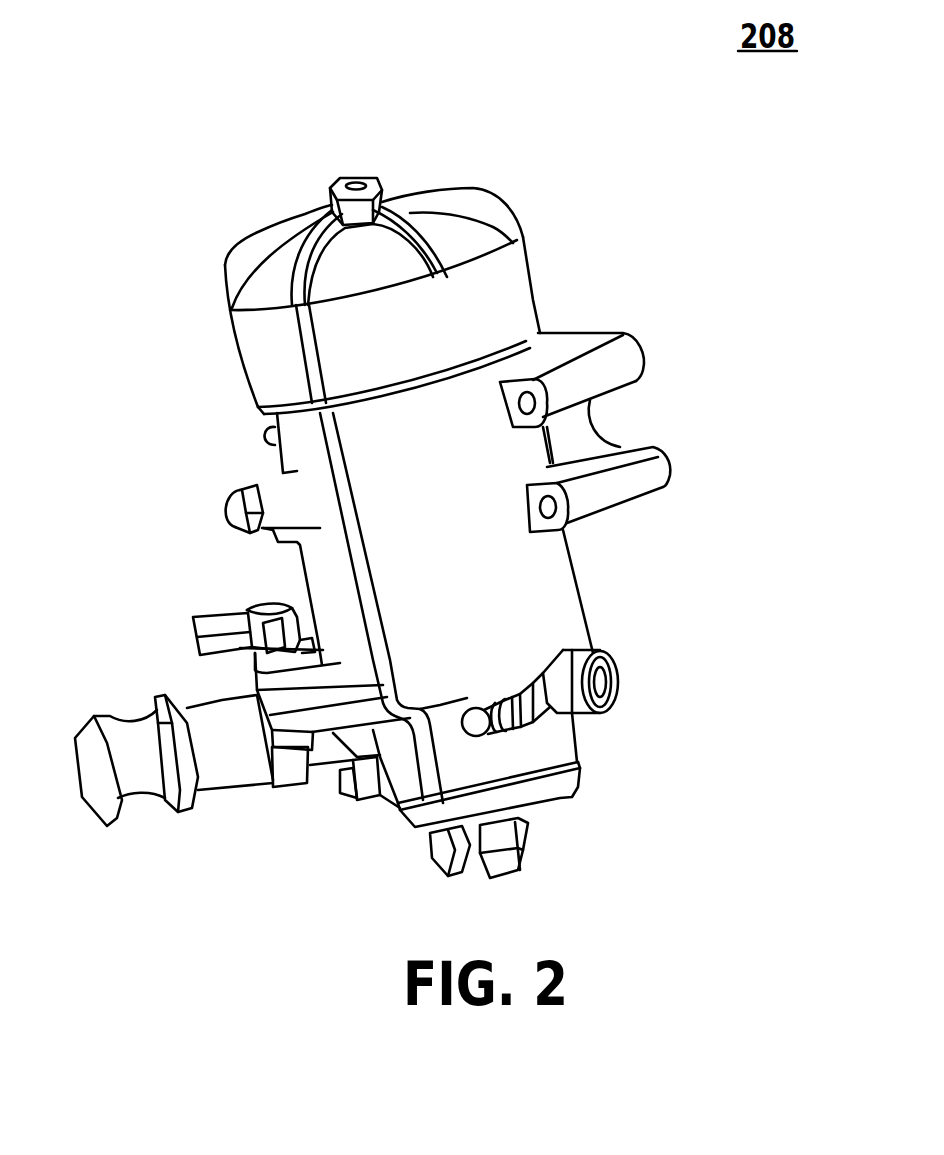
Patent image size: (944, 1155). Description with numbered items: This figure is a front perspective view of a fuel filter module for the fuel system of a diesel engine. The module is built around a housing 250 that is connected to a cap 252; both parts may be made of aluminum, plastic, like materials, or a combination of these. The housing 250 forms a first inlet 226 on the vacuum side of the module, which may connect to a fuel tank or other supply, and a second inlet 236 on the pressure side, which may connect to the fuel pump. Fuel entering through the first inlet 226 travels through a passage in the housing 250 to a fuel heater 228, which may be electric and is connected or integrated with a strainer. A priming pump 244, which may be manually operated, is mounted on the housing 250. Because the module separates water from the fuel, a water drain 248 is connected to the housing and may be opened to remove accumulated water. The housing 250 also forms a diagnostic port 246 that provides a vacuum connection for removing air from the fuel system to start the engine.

The cap 252 is at (513, 285).
The housing 250 is at (553, 570).
The first inlet 226 is at (600, 682).
The diagnostic port 246 is at (482, 733).
The fuel heater 228 is at (537, 800).
The second inlet 236 is at (248, 490).
The water drain 248 is at (262, 610).
The priming pump 244 is at (228, 777).